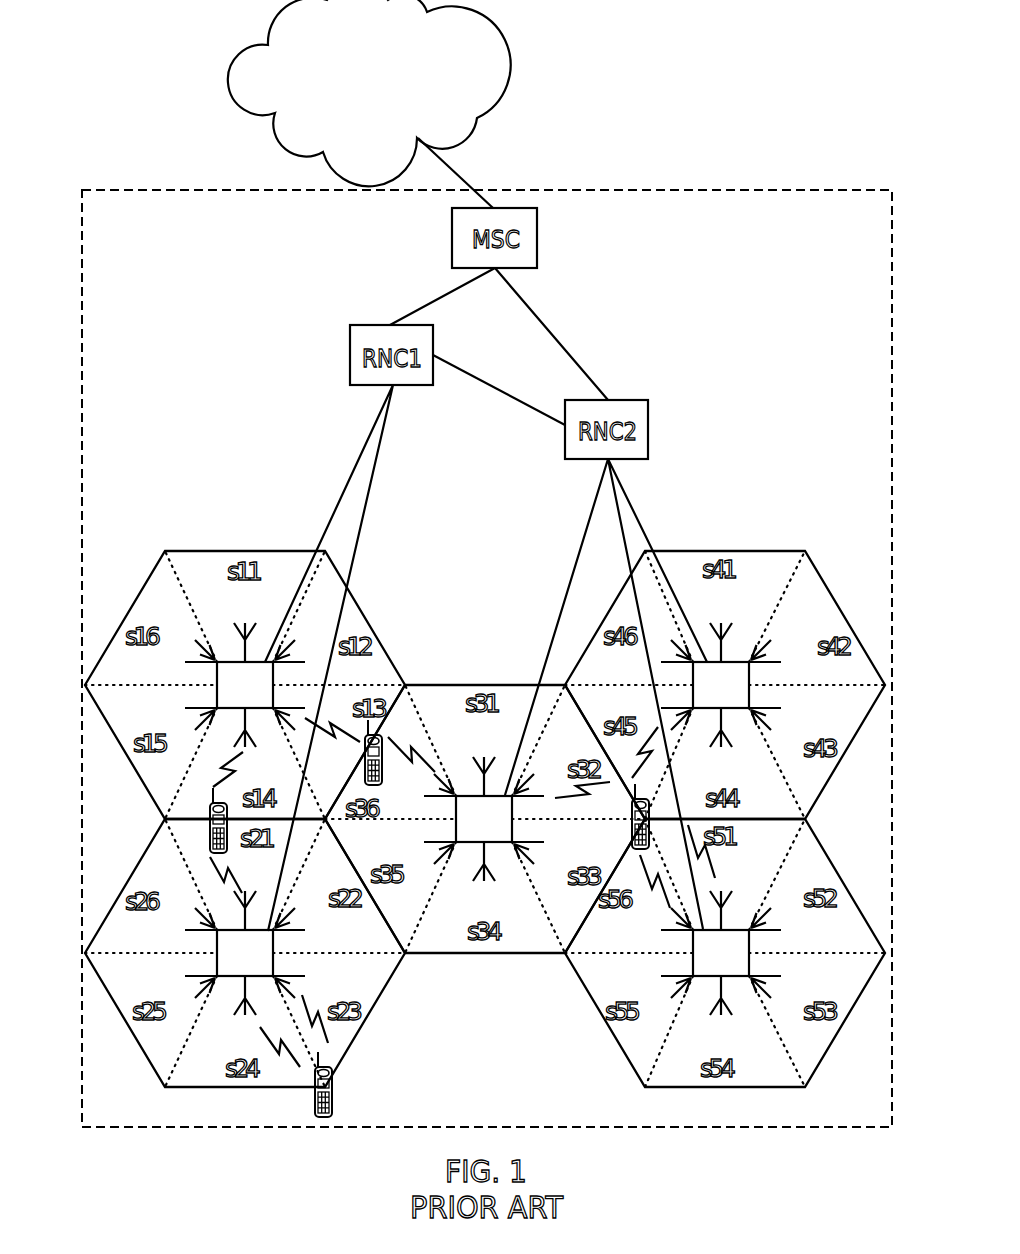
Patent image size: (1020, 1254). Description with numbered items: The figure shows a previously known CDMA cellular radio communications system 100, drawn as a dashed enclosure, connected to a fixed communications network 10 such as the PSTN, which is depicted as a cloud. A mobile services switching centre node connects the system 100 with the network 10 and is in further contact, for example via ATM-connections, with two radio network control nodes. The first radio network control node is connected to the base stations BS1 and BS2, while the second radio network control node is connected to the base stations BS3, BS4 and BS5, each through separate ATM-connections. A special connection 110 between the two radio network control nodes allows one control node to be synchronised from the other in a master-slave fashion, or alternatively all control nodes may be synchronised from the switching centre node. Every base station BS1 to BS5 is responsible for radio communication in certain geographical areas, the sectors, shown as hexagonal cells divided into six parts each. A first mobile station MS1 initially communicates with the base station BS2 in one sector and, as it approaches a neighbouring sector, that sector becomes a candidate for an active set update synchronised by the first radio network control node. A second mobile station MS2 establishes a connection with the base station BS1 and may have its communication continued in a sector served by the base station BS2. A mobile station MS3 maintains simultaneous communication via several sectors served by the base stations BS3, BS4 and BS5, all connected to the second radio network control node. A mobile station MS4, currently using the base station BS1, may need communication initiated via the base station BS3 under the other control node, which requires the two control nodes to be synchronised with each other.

The fixed communications network 10 is at (480, 45).
The CDMA cellular radio communications system 100 is at (158, 189).
The special connection 110 is at (499, 394).
The base station BS1 is at (245, 685).
The base station BS2 is at (245, 953).
The base station BS3 is at (484, 819).
The base station BS4 is at (721, 685).
The base station BS5 is at (721, 953).
The first mobile station MS1 is at (352, 1084).
The second mobile station MS2 is at (244, 831).
The mobile station MS3 is at (612, 817).
The mobile station MS4 is at (348, 752).